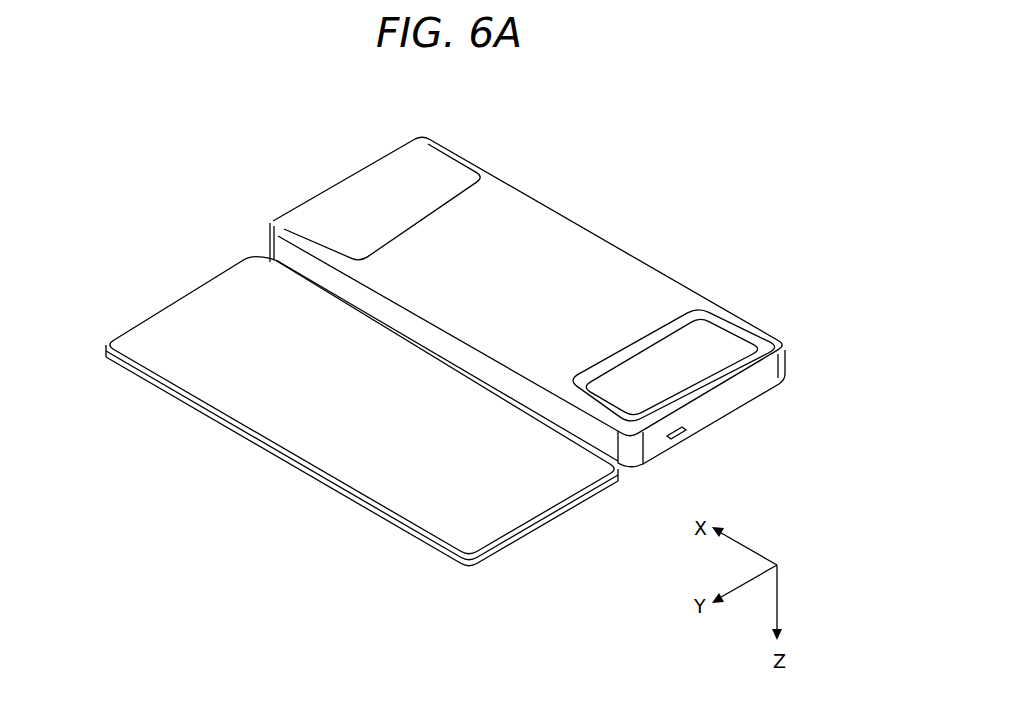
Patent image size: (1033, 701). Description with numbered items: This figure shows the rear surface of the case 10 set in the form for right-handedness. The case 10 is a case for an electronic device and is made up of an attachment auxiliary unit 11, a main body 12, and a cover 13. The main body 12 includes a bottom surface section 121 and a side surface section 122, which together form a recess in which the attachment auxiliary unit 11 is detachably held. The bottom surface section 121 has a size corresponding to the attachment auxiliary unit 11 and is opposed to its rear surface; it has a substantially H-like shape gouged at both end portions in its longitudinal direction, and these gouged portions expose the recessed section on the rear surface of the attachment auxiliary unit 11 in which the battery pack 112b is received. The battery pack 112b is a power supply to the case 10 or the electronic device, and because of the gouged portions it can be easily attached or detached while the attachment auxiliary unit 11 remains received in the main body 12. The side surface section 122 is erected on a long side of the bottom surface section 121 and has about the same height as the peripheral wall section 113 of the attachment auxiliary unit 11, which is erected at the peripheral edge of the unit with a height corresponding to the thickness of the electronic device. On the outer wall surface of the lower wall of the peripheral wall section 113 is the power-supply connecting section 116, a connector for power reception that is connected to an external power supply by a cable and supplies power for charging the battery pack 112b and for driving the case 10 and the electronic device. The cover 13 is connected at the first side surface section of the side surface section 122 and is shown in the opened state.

The case 10 is at (683, 162).
The attachment auxiliary unit 11 is at (405, 176).
The main body 12 is at (640, 283).
The cover 13 is at (550, 492).
The battery pack 112b is at (714, 336).
The peripheral wall section 113 is at (765, 436).
The power-supply connecting section 116 is at (683, 438).
The bottom surface section 121 is at (550, 227).
The side surface section 122 is at (283, 254).